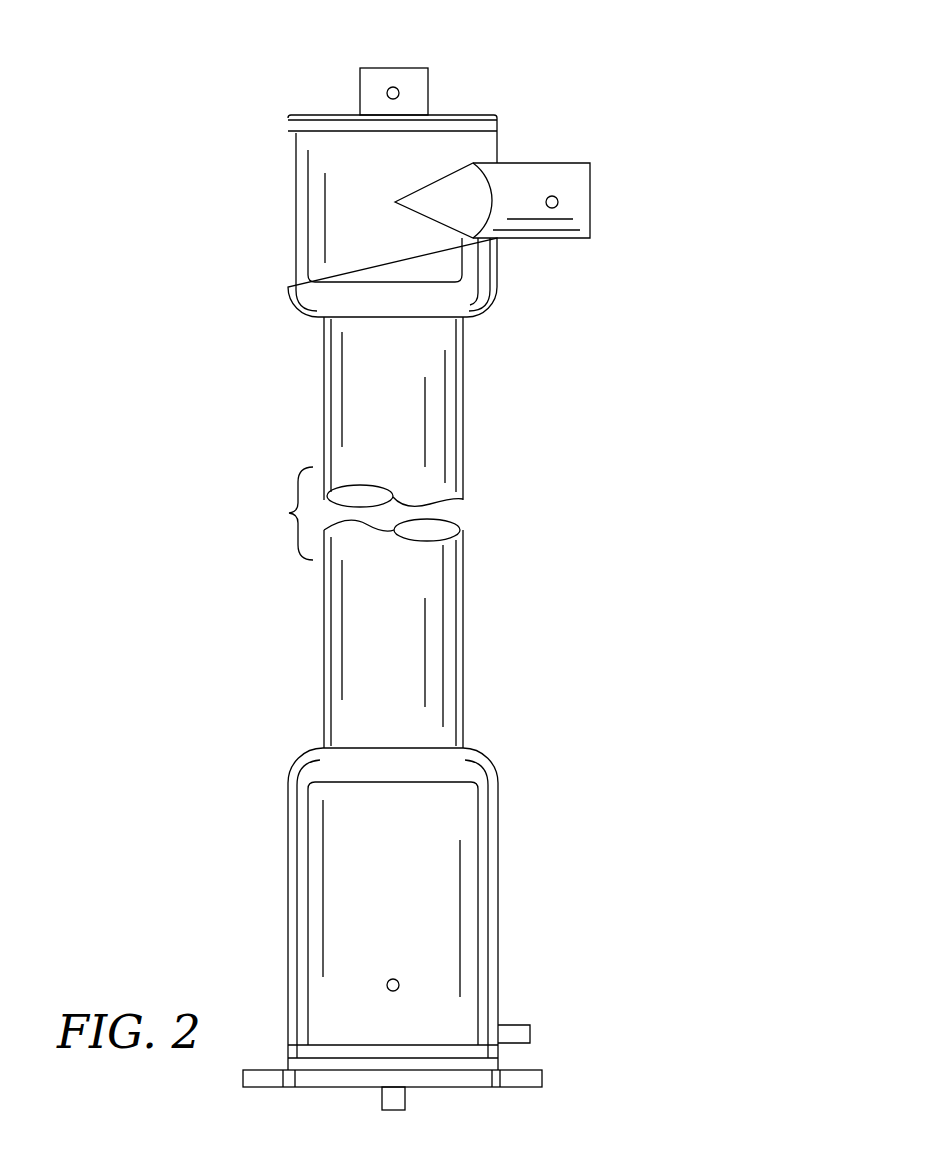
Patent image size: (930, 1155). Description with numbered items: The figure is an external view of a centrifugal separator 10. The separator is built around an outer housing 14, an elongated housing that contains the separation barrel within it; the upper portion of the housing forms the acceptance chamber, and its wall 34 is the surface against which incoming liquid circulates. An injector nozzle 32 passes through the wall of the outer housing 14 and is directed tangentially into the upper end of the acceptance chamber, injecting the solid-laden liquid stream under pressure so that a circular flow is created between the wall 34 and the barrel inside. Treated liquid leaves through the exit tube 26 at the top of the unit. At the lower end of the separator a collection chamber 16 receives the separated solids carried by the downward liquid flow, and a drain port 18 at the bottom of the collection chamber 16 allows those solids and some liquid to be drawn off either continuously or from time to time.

The centrifugal separator 10 is at (226, 163).
The outer housing 14 is at (463, 666).
The collection chamber 16 is at (497, 913).
The drain port 18 is at (515, 1024).
The exit tube 26 is at (430, 91).
The injector nozzle 32 is at (572, 178).
The wall 34 is at (288, 245).